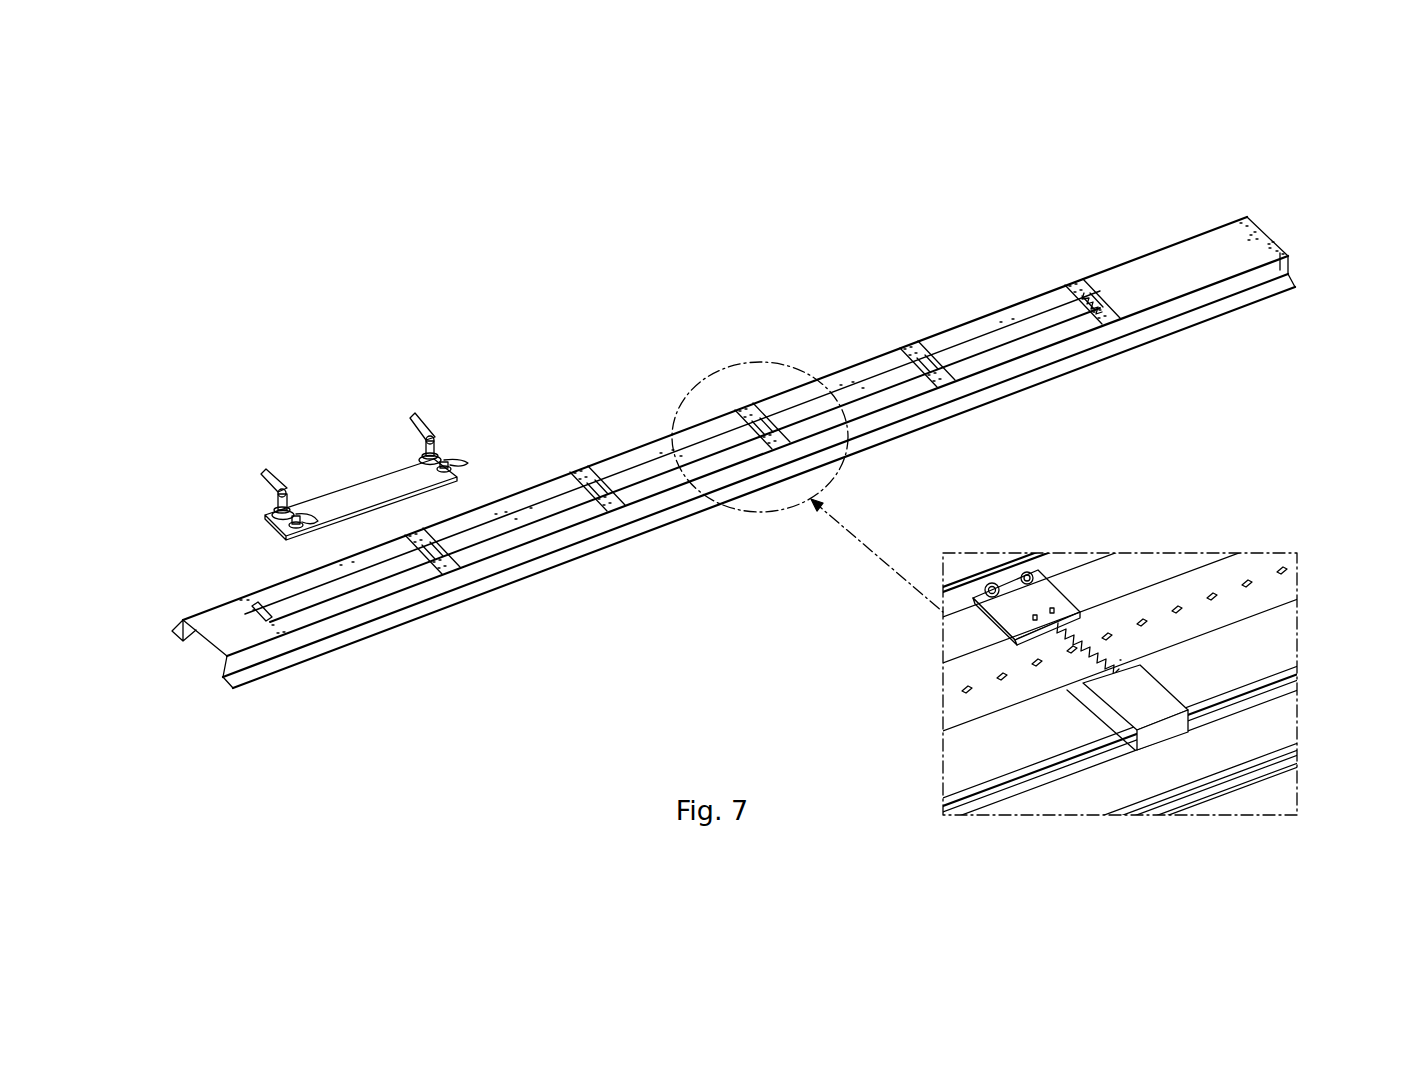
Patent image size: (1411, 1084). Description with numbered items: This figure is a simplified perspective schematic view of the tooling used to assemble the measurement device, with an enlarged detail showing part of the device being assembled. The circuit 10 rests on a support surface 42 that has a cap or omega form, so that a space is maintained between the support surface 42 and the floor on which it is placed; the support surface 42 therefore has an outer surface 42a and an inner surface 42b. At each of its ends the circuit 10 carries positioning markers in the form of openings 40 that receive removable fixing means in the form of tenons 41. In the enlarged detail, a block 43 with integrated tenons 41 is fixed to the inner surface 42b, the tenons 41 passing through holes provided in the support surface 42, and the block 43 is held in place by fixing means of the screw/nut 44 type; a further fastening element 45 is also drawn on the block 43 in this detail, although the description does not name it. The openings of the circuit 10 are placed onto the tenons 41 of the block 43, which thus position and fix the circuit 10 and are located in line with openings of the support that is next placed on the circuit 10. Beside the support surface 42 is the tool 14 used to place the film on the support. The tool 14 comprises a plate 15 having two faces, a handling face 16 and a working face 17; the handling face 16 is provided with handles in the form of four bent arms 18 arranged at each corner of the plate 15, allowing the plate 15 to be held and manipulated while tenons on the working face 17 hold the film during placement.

The tool 14 is at (749, 238).
The support surface 42 is at (1213, 246).
The outer surface 42a is at (234, 617).
The inner surface 42b is at (213, 646).
The openings 40 is at (605, 498).
The screw/nut 44 is at (583, 471).
The fastening screws 45 is at (608, 504).
The block 43 is at (1153, 703).
The tenons 41 is at (1120, 680).
The circuit 10 is at (1217, 580).
The plate 15 is at (393, 476).
The handling face 16 is at (322, 491).
The working face 17 is at (327, 507).
The arms 18 is at (449, 447).